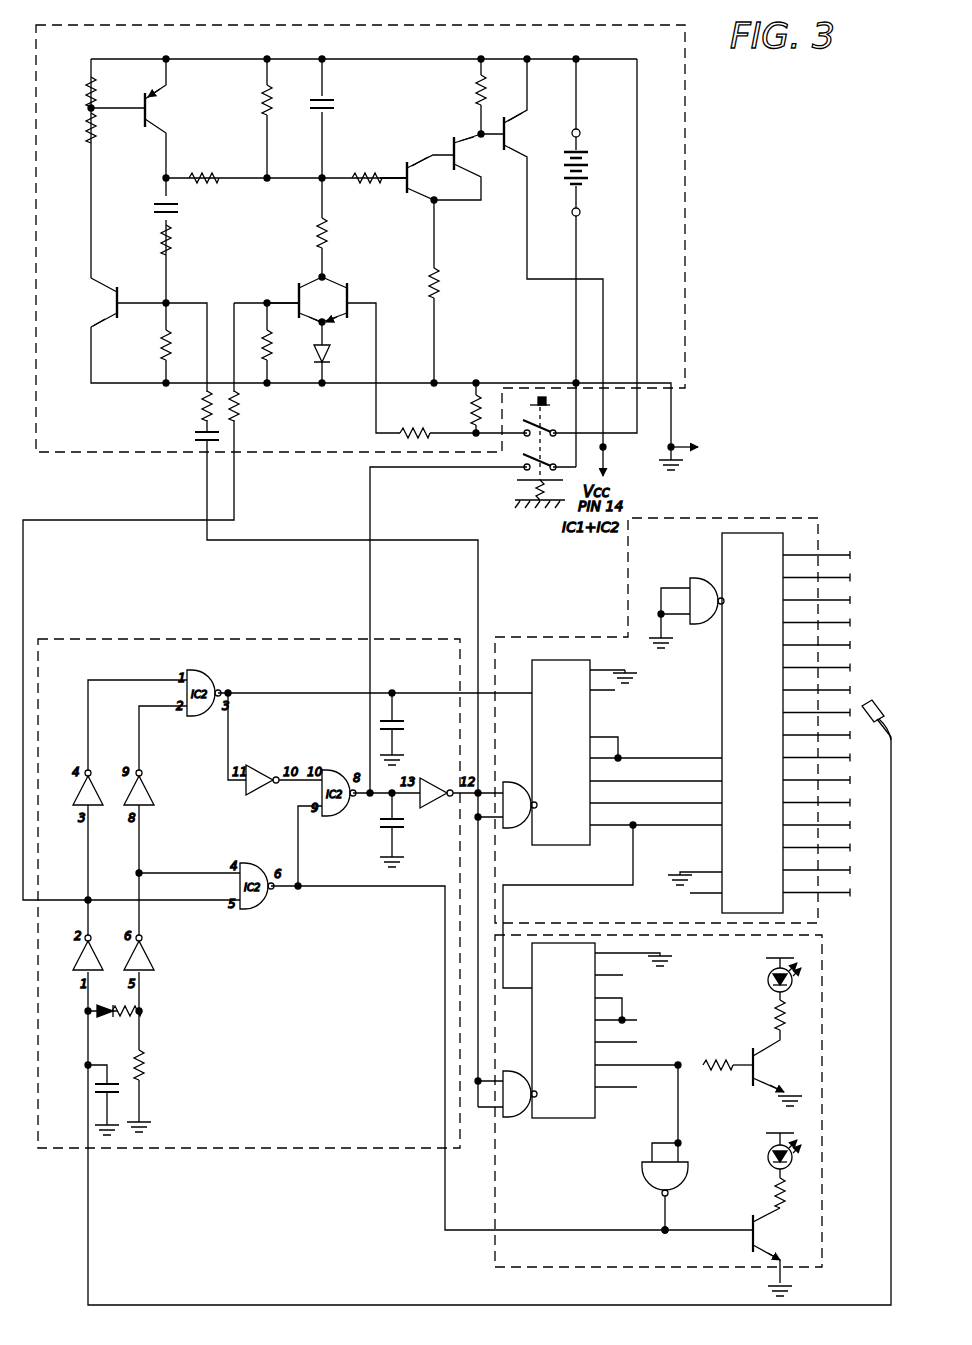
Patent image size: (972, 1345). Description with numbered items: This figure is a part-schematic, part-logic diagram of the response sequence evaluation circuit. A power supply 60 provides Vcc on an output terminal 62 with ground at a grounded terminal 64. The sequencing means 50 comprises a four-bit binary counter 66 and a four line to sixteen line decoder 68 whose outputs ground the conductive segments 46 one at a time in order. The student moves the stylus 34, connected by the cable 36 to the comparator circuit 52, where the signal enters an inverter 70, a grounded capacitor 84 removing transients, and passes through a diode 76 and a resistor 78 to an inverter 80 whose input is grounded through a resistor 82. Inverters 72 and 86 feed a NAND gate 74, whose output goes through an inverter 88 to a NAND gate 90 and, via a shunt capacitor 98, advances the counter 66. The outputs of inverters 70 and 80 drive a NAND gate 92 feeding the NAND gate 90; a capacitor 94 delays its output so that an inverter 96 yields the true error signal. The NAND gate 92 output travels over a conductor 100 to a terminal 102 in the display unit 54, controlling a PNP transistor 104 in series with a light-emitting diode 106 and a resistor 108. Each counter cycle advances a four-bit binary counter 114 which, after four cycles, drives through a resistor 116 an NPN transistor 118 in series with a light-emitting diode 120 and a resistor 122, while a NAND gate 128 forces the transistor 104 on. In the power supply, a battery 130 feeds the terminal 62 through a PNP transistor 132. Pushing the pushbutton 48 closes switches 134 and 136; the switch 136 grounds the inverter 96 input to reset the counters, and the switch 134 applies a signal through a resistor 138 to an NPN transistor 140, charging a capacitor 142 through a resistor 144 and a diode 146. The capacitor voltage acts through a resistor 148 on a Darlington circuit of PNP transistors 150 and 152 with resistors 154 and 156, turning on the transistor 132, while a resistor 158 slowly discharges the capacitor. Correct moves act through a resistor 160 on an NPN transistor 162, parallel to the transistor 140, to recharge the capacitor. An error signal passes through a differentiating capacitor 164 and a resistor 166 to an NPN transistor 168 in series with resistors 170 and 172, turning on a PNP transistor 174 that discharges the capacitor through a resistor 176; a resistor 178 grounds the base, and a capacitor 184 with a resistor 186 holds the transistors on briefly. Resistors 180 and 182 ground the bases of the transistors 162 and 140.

The stylus 34 is at (878, 710).
The cable 36 is at (891, 922).
The conductive segments 46 is at (856, 544).
The pushbutton 48 is at (544, 397).
The sequencing means 50 is at (628, 543).
The comparator circuit 52 is at (193, 1149).
The display unit 54 is at (825, 1100).
The power supply 60 is at (686, 366).
The output terminal 62 is at (604, 447).
The grounded terminal 64 is at (680, 456).
The four-bit binary counter 66 is at (572, 660).
The 4 line to 16 line decoder 68 is at (722, 545).
The inverter 70 is at (80, 960).
The inverter 72 is at (92, 776).
The NAND gate 74 is at (206, 684).
The diode 76 is at (110, 1016).
The resistor 78 is at (128, 1010).
The inverter 80 is at (152, 966).
The resistor 82 is at (147, 1090).
The capacitor 84 is at (102, 1096).
The inverter 86 is at (148, 797).
The inverter 88 is at (253, 795).
The NAND gate 90 is at (337, 772).
The NAND gate 92 is at (250, 912).
The capacitor 94 is at (386, 830).
The inverter 96 is at (429, 781).
The shunt capacitor 98 is at (395, 723).
The conductor 100 is at (444, 1205).
The terminal 102 is at (665, 1234).
The PNP transistor 104 is at (775, 1232).
The light-emitting diode 106 is at (796, 1160).
The resistor 108 is at (790, 1187).
The four-bit binary counter 114 is at (542, 1118).
The resistor 116 is at (736, 1076).
The NPN transistor 118 is at (775, 1062).
The light-emitting diode 120 is at (796, 986).
The resistor 122 is at (790, 1015).
The NAND gate 128 is at (648, 1182).
The battery 130 is at (580, 150).
The PNP transistor 132 is at (510, 129).
The switch 134 is at (521, 424).
The switch 136 is at (520, 458).
The resistor 138 is at (418, 430).
The NPN transistor 140 is at (352, 292).
The capacitor 142 is at (326, 102).
The resistor 144 is at (319, 232).
The diode 146 is at (330, 356).
The resistor 148 is at (364, 172).
The PNP transistor 150 is at (403, 186).
The PNP transistor 152 is at (455, 142).
The resistor 154 is at (478, 90).
The resistor 156 is at (438, 287).
The resistor 158 is at (263, 101).
The resistor 160 is at (238, 412).
The NPN transistor 162 is at (296, 291).
The differentiating capacitor 164 is at (195, 440).
The resistor 166 is at (202, 406).
The NPN transistor 168 is at (121, 292).
The resistor 170 is at (89, 85).
The resistor 172 is at (89, 130).
The PNP transistor 174 is at (142, 121).
The resistor 176 is at (192, 175).
The resistor 178 is at (163, 346).
The resistor 180 is at (270, 350).
The resistor 182 is at (474, 400).
The capacitor 184 is at (160, 204).
The resistor 186 is at (160, 240).